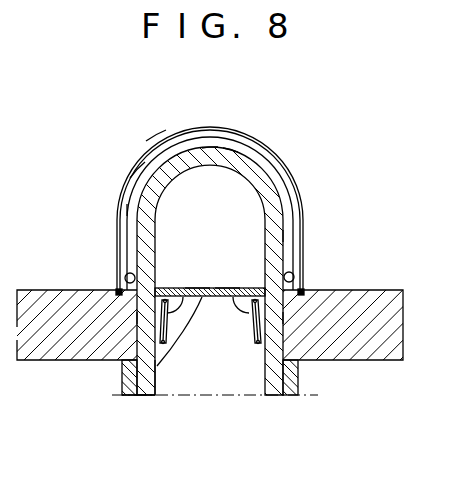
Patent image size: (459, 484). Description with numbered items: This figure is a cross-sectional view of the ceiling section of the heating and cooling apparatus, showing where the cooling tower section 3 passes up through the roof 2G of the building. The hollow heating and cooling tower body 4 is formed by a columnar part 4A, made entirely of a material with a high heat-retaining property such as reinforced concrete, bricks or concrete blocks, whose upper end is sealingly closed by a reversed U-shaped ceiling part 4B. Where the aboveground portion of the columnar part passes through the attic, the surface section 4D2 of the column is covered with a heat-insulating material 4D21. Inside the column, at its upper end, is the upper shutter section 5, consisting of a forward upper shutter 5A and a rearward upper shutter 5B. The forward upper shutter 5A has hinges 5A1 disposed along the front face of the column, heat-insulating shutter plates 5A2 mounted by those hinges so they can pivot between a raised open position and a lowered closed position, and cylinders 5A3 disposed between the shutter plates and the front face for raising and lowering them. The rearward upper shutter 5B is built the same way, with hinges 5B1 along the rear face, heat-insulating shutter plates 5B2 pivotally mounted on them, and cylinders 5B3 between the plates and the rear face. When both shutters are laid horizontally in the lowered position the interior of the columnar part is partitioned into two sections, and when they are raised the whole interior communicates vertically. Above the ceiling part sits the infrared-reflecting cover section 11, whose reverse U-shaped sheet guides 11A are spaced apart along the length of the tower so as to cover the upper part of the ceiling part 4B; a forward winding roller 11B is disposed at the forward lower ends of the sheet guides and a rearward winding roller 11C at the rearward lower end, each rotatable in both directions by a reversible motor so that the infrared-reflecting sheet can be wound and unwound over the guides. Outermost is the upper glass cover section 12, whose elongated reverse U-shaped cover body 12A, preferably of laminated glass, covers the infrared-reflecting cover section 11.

The roof 2G is at (357, 347).
The cooling tower section 3 is at (230, 149).
The heating and cooling tower body 4 is at (278, 374).
The columnar part 4A is at (130, 397).
The ceiling part 4B is at (210, 148).
The section of the aboveground heat absorbing-and-radiating section 4D2 is at (157, 377).
The heat-insulating material 4D21 is at (125, 373).
The upper shutter section 5 is at (218, 297).
The forward upper shutter 5A is at (283, 318).
The hinges 5A1 is at (272, 242).
The shutter plates 5A2 is at (225, 288).
The cylinders 5A3 is at (252, 306).
The rearward upper shutter 5B is at (138, 317).
The hinges 5B1 is at (123, 210).
The shutter plates 5B2 is at (197, 288).
The cylinders 5B3 is at (170, 306).
The infrared-reflecting cover section 11 is at (302, 204).
The sheet guides 11A is at (137, 170).
The forward winding roller 11B is at (292, 274).
The rearward winding roller 11C is at (128, 277).
The upper glass cover section 12 is at (264, 145).
The cover body 12A is at (154, 146).